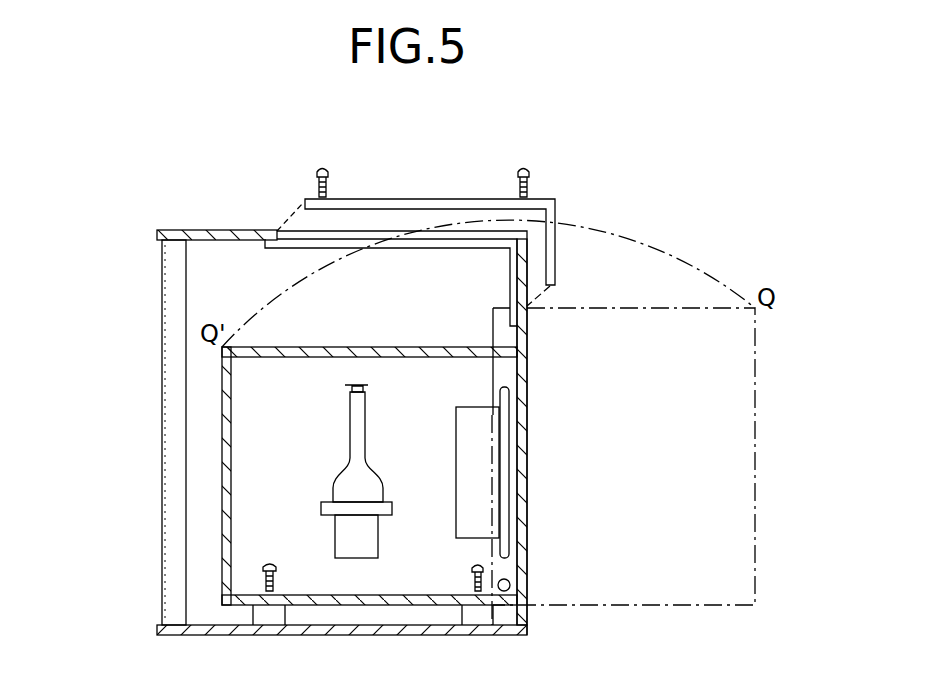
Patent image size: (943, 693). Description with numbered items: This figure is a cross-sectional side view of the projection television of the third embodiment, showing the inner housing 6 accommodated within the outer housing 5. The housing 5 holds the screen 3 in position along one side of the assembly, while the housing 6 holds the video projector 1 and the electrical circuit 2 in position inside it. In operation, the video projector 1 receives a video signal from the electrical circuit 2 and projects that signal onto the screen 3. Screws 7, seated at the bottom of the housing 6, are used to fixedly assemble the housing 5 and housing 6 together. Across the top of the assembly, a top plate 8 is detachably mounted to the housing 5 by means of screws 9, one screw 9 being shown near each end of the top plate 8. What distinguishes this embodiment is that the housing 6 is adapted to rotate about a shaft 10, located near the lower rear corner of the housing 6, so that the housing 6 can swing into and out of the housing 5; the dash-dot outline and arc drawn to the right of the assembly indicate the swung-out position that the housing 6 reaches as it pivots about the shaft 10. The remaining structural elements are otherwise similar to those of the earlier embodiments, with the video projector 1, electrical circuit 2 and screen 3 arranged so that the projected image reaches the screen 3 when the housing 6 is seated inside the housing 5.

The video projector 1 is at (333, 482).
The electrical circuit 2 is at (457, 435).
The screen 3 is at (160, 401).
The housing 5 is at (207, 230).
The housing 6 is at (410, 347).
The screw 7 is at (269, 561).
The top plate 8 is at (415, 198).
The screw 9 is at (523, 168).
The shaft 10 is at (510, 585).